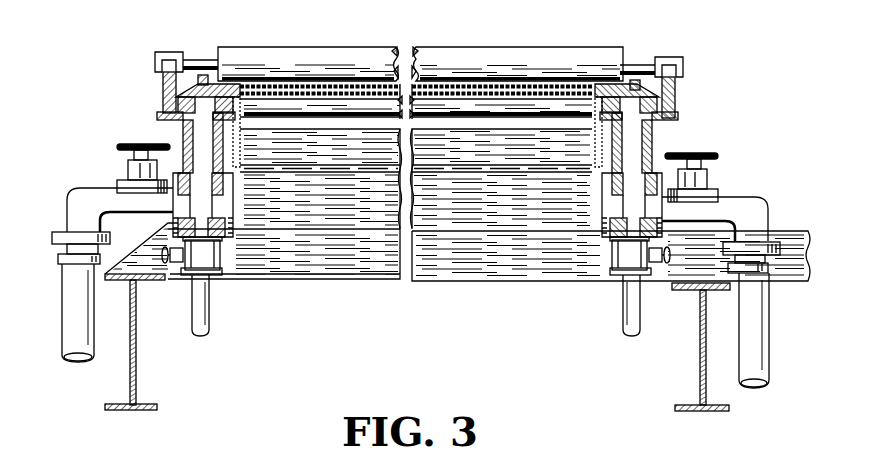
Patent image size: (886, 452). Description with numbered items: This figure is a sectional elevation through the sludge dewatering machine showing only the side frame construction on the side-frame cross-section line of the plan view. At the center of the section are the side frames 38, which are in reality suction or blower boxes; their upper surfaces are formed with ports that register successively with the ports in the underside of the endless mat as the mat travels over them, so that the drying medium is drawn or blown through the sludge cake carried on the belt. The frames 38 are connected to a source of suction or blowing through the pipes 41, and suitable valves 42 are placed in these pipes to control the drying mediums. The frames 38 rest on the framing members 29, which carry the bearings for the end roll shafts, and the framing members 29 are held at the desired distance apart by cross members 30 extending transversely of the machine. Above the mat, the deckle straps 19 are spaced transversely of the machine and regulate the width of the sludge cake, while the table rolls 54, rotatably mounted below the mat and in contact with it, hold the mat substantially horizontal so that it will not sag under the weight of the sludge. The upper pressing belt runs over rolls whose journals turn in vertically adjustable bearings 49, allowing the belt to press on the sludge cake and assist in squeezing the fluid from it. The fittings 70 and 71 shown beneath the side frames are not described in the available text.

The deckle straps 19 is at (204, 72).
The vertically adjustable bearings 49 is at (354, 47).
The table rolls 54 is at (562, 118).
The cross members 30 is at (489, 255).
The side frames 38 is at (183, 150).
The valves 42 is at (128, 163).
The pipes 41 is at (63, 320).
The clamp block 71 is at (222, 262).
The outlet pipe 70 is at (211, 311).
The framing members 29 is at (137, 362).